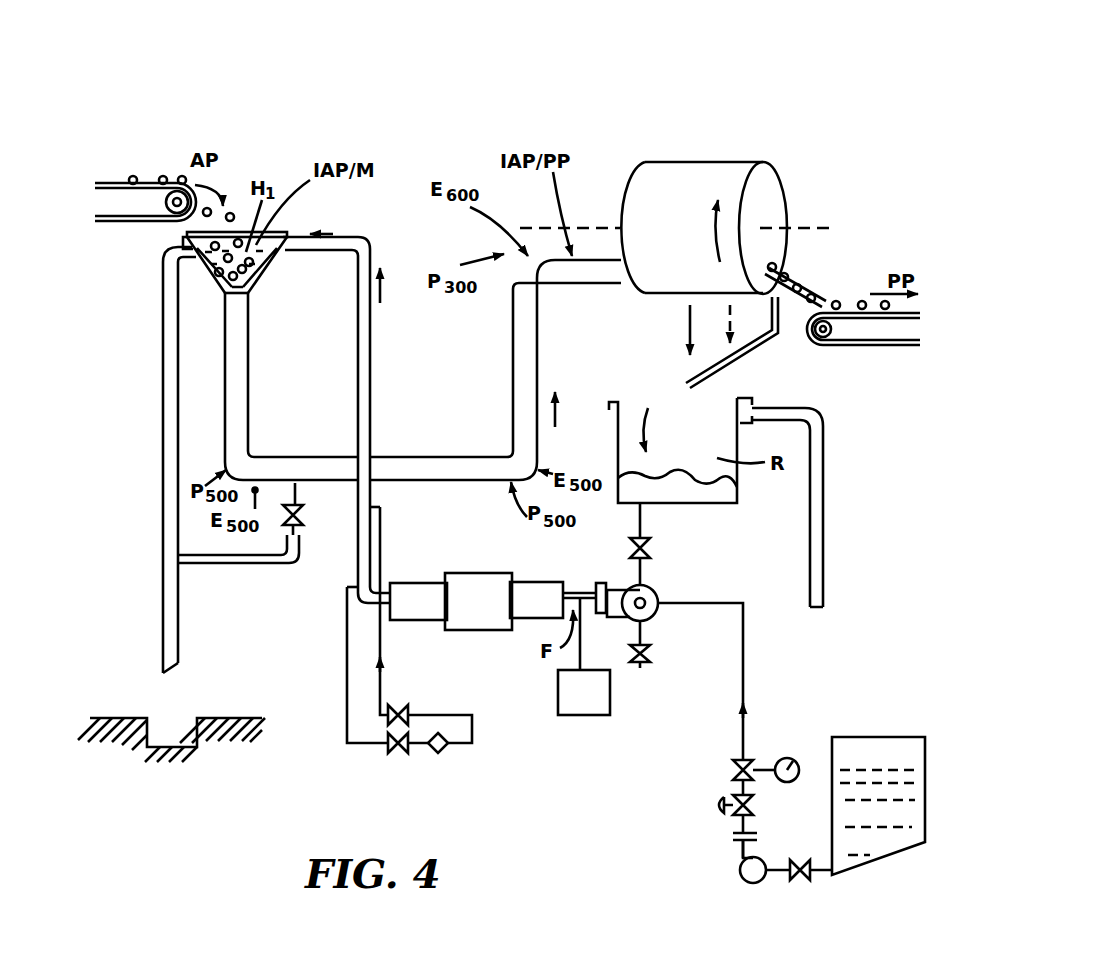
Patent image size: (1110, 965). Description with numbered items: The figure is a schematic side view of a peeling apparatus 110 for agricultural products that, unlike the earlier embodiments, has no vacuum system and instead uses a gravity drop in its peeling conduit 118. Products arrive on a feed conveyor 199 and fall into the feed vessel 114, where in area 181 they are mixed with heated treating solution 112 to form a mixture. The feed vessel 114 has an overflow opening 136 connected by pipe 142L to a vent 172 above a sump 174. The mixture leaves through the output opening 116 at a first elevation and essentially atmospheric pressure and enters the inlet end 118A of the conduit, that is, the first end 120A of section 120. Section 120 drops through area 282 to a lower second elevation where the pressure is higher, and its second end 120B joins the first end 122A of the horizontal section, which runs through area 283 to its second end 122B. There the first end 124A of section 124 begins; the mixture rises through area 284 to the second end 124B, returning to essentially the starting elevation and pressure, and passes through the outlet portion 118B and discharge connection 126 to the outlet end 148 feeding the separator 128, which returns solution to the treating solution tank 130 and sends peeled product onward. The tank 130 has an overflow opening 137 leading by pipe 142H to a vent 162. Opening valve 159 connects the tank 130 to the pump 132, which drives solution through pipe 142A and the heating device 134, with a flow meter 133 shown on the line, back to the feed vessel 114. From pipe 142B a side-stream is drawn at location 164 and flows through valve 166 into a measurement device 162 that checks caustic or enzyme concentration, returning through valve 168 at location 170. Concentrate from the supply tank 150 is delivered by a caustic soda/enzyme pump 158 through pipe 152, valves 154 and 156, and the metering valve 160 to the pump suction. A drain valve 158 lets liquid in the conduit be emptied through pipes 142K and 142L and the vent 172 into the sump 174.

The peeling apparatus 110 is at (373, 90).
The feed conveyor 199 is at (131, 160).
The area of the peeling conduit 181 is at (238, 162).
The feed vessel 114 is at (286, 221).
The overflow opening 136 is at (178, 257).
The output opening 116 is at (237, 303).
The conduit inlet end 118A is at (219, 316).
The first end of section 120 120A is at (256, 320).
The area of the peeling conduit 282 is at (258, 394).
The section of the peeling conduit 120 is at (258, 430).
The second end of section 120 120B is at (257, 452).
The area of the peeling conduit 283 is at (410, 380).
The peeling conduit 118 is at (394, 455).
The first end of section 122 122A is at (307, 456).
The second end of section 122 122B is at (482, 450).
The section of the peeling conduit 124 is at (505, 393).
The first end of section 124 124A is at (507, 432).
The second end of section 124 124B is at (601, 288).
The area of the peeling conduit 284 is at (506, 337).
The conduit outlet end 118B is at (561, 291).
The discharge connection 126 is at (597, 256).
The separator 128 is at (744, 170).
The outlet end 148 is at (632, 258).
The treating solution 112 is at (681, 355).
The treating solution tank 130 is at (703, 506).
The overflow opening 137 is at (754, 409).
The pipe 142H is at (826, 478).
The valve 159 is at (648, 550).
The pump 132 is at (660, 607).
The pipe 142A is at (574, 590).
The heating device 134 is at (430, 621).
The flow meter 133 is at (597, 713).
The pipe 142B is at (368, 490).
The location 170 is at (360, 509).
The location 164 is at (362, 585).
The valve 168 is at (401, 708).
The valve 166 is at (392, 748).
The measurement device / vent 162 is at (450, 752).
The caustic soda/enzyme pump / valve 158 is at (299, 528).
The pipe 142K is at (250, 560).
The pipe 142L is at (172, 412).
The vent 172 is at (180, 664).
The sump 174 is at (163, 740).
The pipe 152 is at (748, 737).
The metering valve 160 is at (733, 767).
The valve 156 is at (740, 809).
The valve 154 is at (798, 860).
The supply tank 150 is at (885, 737).